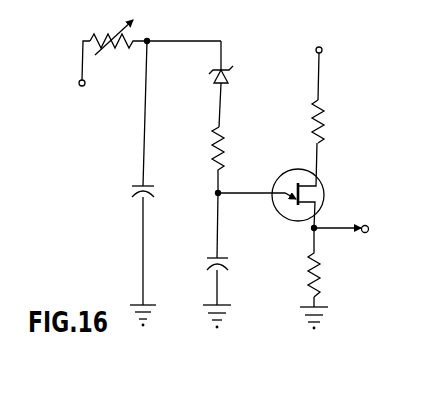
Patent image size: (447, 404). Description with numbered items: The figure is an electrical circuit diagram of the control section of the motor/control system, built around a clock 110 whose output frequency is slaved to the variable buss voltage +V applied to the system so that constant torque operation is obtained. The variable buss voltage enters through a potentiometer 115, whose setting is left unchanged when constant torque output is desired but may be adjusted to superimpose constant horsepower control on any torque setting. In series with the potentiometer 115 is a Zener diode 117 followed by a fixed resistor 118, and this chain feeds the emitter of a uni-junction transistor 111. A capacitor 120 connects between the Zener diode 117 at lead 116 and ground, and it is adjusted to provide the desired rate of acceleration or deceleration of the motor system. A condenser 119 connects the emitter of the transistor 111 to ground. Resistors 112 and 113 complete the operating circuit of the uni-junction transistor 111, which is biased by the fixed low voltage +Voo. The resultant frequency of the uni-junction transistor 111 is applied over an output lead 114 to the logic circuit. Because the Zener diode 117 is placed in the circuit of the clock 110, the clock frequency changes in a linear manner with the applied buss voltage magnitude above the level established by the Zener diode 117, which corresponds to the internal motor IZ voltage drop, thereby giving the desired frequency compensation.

The clock 110 is at (98, 260).
The uni-junction transistor 111 is at (286, 178).
The resistor 112 is at (323, 132).
The resistor 113 is at (320, 289).
The output lead 114 is at (328, 231).
The potentiometer 115 is at (118, 46).
The lead 116 is at (188, 42).
The Zener diode 117 is at (235, 62).
The fixed resistor 118 is at (224, 141).
The condenser 119 is at (222, 258).
The capacitor 120 is at (148, 186).